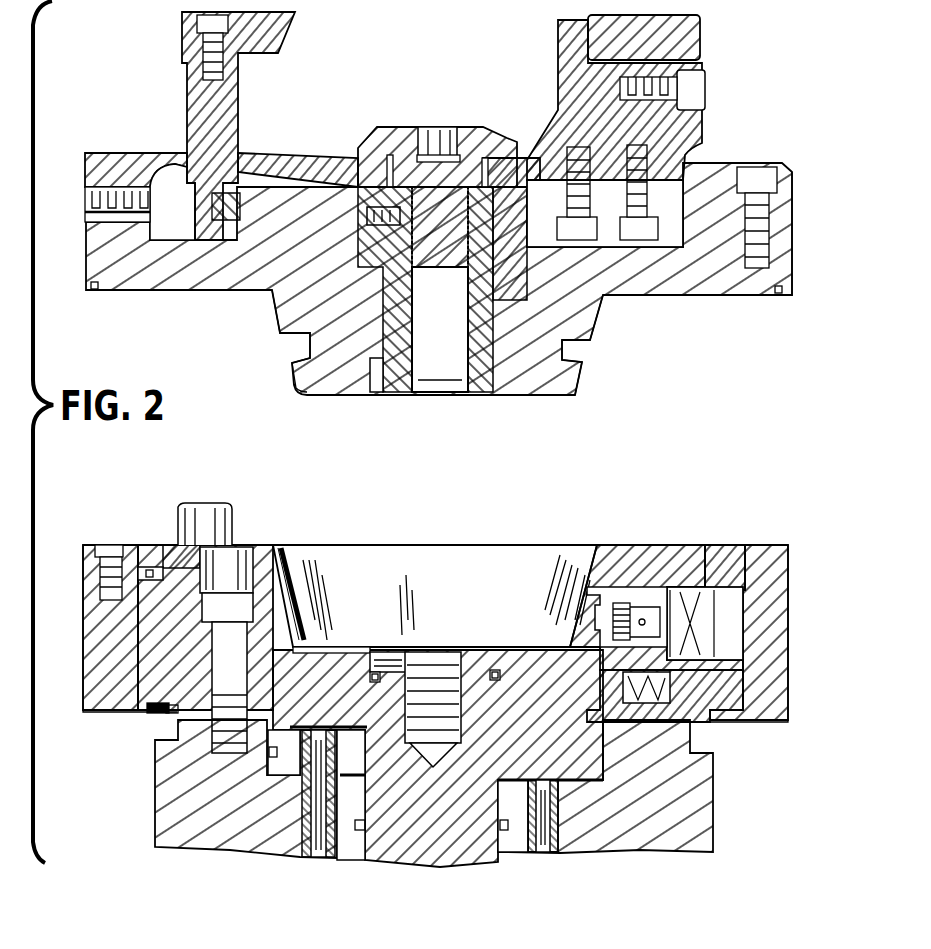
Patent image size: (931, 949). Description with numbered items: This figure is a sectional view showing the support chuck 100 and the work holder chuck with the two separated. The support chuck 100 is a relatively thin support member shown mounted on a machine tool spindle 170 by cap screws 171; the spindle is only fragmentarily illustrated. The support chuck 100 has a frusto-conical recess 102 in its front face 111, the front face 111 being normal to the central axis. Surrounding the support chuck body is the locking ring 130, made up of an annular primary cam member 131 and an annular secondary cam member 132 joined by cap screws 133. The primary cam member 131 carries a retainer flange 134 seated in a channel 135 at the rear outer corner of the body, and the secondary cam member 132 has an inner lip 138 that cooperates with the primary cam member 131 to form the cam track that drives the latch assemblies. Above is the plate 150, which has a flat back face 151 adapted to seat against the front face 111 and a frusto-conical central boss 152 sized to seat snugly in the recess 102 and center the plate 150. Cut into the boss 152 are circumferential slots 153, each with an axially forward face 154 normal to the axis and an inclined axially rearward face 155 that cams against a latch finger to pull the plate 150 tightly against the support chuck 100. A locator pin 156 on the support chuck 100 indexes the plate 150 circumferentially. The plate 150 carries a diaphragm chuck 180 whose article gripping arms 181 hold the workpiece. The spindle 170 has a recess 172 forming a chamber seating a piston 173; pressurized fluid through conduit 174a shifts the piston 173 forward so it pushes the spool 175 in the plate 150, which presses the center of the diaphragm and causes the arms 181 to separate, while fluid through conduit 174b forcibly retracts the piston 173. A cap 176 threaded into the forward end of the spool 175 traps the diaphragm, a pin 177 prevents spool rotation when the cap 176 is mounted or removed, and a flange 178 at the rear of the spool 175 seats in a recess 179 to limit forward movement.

The support chuck 100 is at (640, 548).
The frusto-conical recess 102 is at (385, 557).
The front face 111 is at (613, 548).
The locking ring 130 is at (93, 714).
The primary cam member 131 is at (93, 638).
The secondary cam member 132 is at (142, 545).
The cap screws 133 is at (103, 544).
The retainer flange 134 is at (128, 715).
The channel 135 is at (156, 715).
The inner lip 138 is at (703, 565).
The plate 150 is at (793, 262).
The flat back face 151 is at (692, 297).
The frusto-conical central boss 152 is at (273, 313).
The circumferential slots 153 is at (582, 360).
The axially forward face 154 is at (578, 338).
The axially rearward face 155 is at (548, 398).
The locator pin 156 is at (218, 503).
The machine tool spindle 170 is at (714, 803).
The cap screws 171 is at (216, 592).
The recess 172 is at (678, 722).
The piston 173 is at (438, 863).
The conduit 174a is at (543, 856).
The conduit 174b is at (318, 858).
The spool 175 is at (386, 394).
The cap 176 is at (365, 128).
The pin 177 is at (367, 214).
The flange 178 is at (485, 386).
The recess 179 is at (369, 385).
The diaphragm chuck 180 is at (258, 152).
The article gripping arms 181 is at (562, 85).